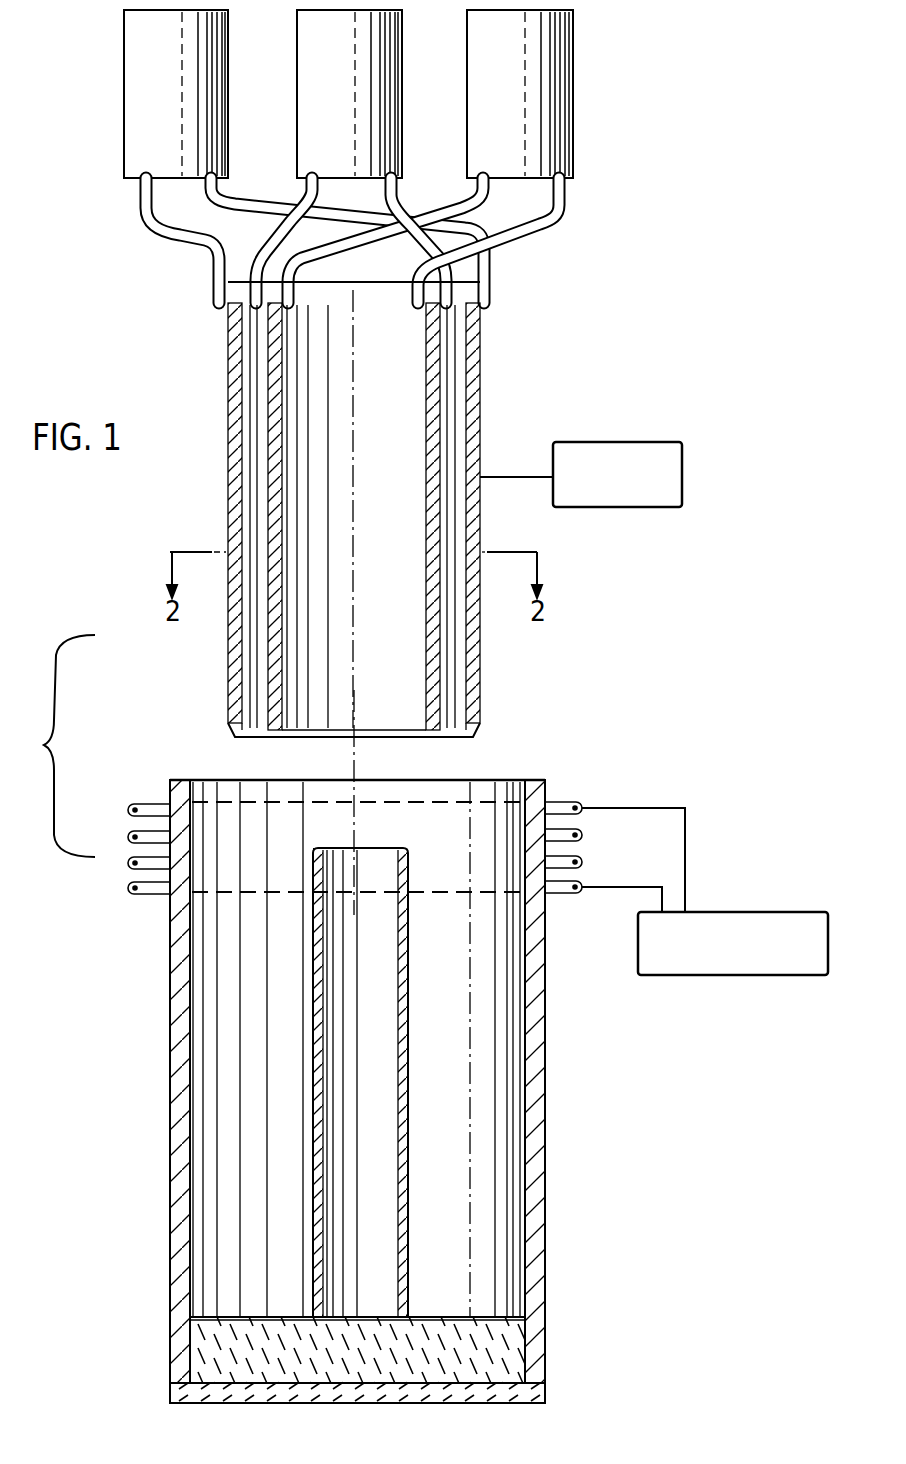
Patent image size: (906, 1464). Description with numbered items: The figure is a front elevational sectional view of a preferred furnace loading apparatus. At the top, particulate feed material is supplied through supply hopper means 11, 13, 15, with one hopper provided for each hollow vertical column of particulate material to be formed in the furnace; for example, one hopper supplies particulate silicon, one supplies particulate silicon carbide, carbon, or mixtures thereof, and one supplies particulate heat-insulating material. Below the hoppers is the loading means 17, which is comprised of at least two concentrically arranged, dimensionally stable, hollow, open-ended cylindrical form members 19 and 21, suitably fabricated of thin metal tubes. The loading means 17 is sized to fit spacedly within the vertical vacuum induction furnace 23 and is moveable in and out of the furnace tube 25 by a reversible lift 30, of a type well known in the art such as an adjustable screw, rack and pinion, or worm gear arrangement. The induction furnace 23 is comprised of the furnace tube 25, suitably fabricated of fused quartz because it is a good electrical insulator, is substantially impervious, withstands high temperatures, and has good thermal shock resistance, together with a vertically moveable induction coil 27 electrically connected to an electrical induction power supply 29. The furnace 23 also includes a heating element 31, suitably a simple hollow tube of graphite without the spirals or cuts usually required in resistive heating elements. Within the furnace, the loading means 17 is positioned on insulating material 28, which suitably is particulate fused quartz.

The supply hopper 11 is at (205, 78).
The supply hopper 13 is at (380, 78).
The supply hopper 15 is at (553, 78).
The loading means 17 is at (359, 509).
The cylindrical form member 19 is at (478, 347).
The cylindrical form member 21 is at (275, 641).
The vertical vacuum induction furnace 23 is at (384, 1091).
The furnace tube 25 is at (547, 1077).
The induction coil 27 is at (578, 866).
The insulating material 28 is at (500, 1348).
The electrical induction power supply 29 is at (798, 968).
The reversible lift 30 is at (660, 507).
The heating element 31 is at (407, 1100).